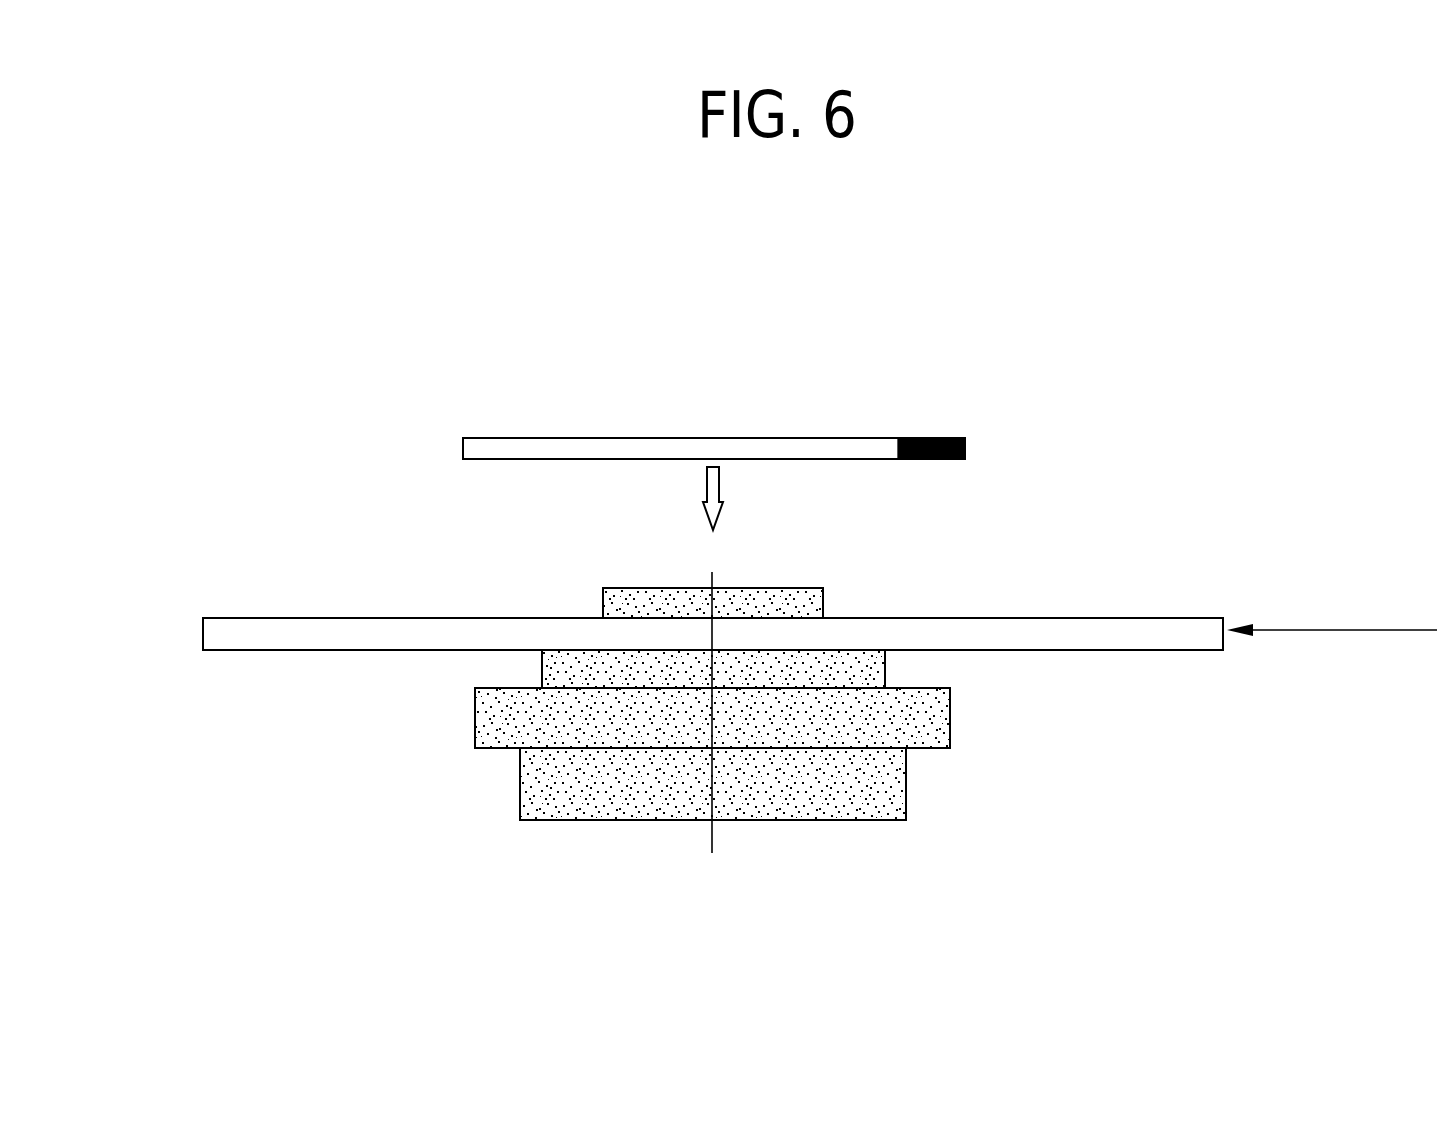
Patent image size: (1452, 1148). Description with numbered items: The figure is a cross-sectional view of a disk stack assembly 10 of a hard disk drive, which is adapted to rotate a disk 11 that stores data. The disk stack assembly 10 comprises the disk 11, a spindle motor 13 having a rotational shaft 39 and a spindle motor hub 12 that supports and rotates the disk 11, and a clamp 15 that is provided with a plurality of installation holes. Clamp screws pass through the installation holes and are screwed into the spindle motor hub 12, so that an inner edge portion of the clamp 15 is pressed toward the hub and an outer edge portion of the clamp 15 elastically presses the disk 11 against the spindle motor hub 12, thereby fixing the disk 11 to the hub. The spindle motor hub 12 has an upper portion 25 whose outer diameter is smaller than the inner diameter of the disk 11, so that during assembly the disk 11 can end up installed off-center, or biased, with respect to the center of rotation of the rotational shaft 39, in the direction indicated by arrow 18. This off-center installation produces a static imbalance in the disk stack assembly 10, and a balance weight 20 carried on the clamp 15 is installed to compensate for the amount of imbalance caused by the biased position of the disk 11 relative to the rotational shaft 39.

The disk stack assembly 10 is at (228, 362).
The disk 11 is at (400, 645).
The spindle motor hub 12 is at (885, 663).
The spindle motor 13 is at (935, 792).
The clamp 15 is at (463, 450).
The arrow 18 is at (1325, 631).
The balance weight 20 is at (965, 441).
The upper portion of spindle motor hub 25 is at (823, 600).
The rotational shaft 39 is at (700, 560).